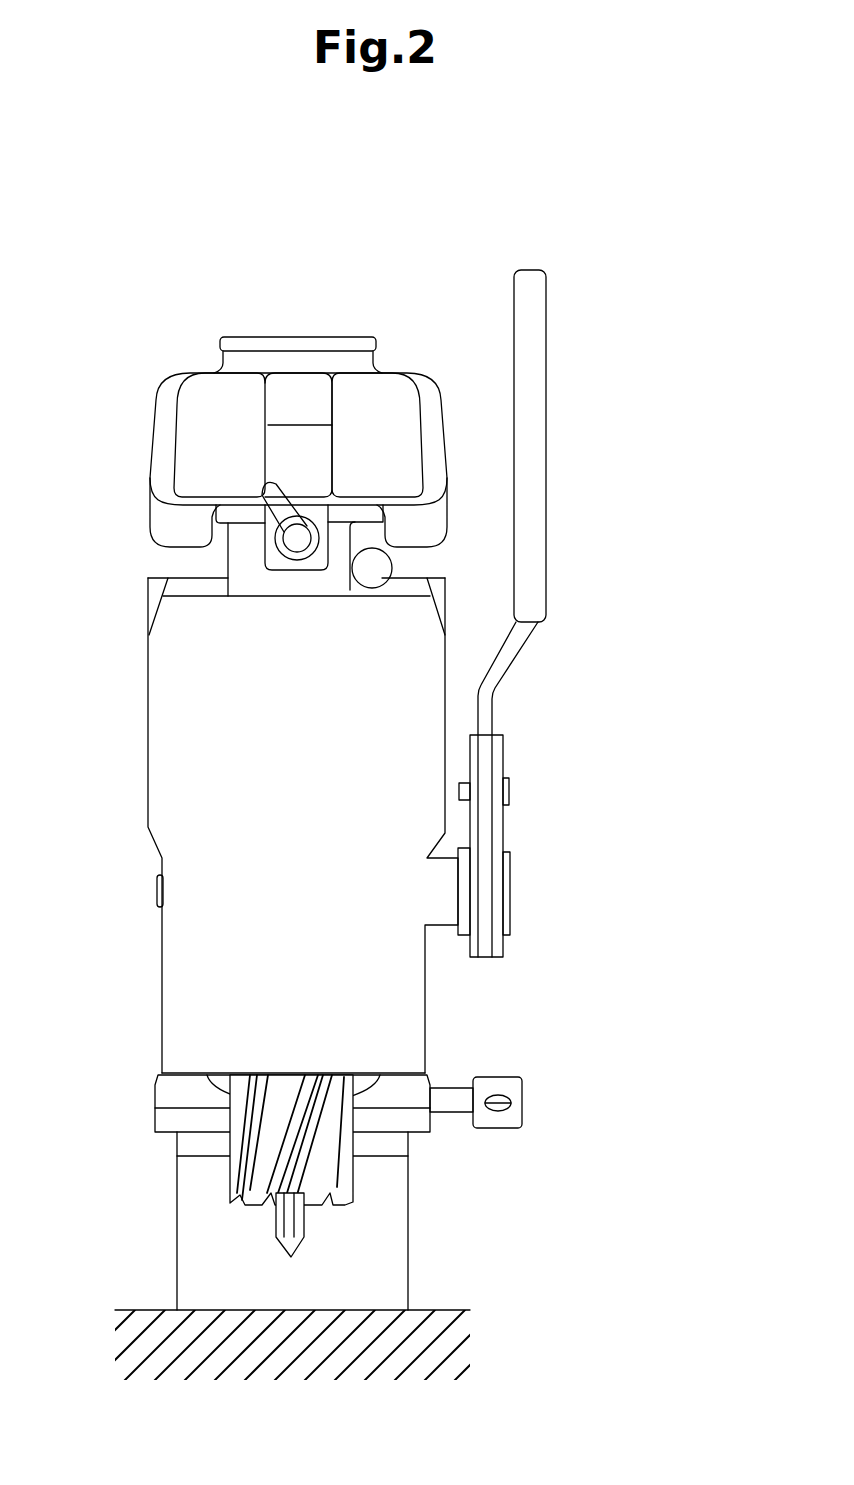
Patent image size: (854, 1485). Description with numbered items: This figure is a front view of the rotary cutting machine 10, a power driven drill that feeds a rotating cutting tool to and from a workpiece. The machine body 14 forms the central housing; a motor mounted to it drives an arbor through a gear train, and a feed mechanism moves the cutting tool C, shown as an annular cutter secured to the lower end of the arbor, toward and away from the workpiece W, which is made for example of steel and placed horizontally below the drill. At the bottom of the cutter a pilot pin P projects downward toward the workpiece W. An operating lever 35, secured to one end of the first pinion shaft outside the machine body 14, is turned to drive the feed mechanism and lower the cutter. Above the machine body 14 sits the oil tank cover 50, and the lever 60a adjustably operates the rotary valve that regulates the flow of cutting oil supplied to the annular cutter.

The rotary cutting machine 10 is at (474, 392).
The machine body 14 is at (445, 717).
The operating lever 35 is at (547, 453).
The cover 50 is at (414, 344).
The lever 60a is at (268, 492).
The cutting tool C is at (228, 1173).
The pilot pin P is at (313, 1230).
The workpiece W is at (442, 1310).